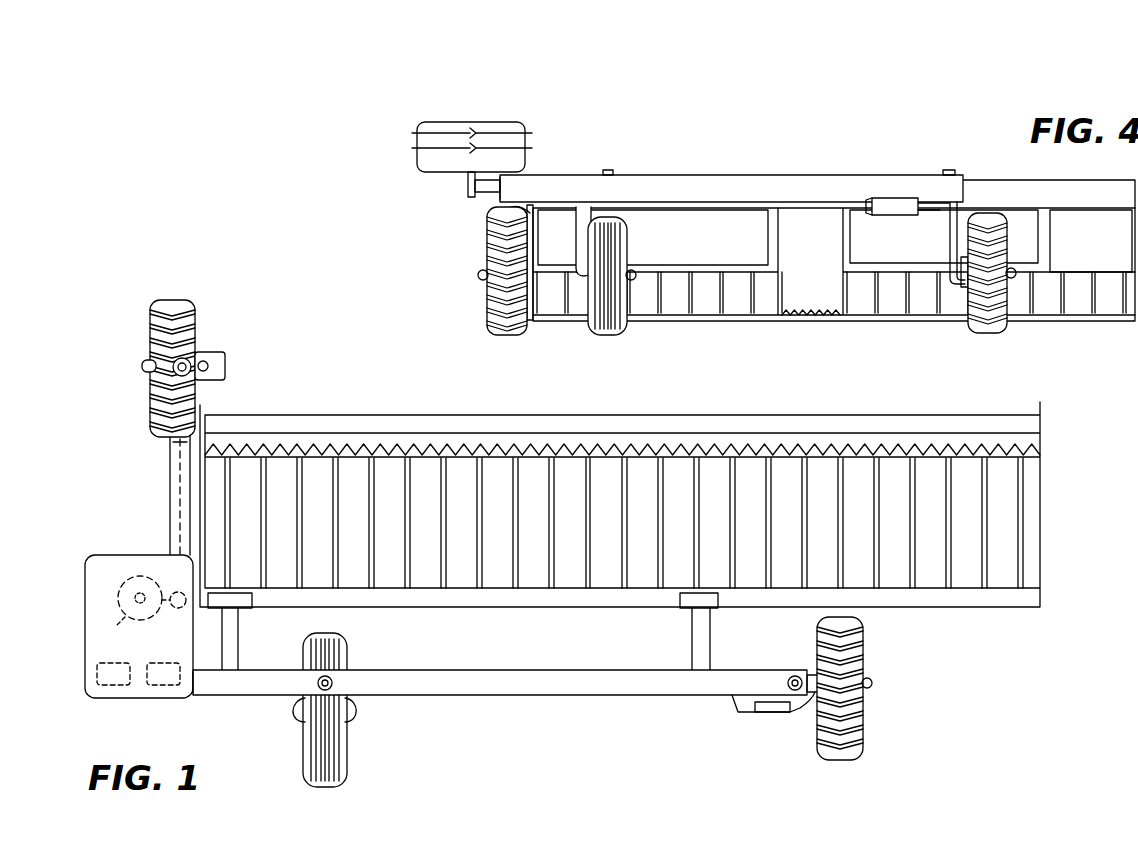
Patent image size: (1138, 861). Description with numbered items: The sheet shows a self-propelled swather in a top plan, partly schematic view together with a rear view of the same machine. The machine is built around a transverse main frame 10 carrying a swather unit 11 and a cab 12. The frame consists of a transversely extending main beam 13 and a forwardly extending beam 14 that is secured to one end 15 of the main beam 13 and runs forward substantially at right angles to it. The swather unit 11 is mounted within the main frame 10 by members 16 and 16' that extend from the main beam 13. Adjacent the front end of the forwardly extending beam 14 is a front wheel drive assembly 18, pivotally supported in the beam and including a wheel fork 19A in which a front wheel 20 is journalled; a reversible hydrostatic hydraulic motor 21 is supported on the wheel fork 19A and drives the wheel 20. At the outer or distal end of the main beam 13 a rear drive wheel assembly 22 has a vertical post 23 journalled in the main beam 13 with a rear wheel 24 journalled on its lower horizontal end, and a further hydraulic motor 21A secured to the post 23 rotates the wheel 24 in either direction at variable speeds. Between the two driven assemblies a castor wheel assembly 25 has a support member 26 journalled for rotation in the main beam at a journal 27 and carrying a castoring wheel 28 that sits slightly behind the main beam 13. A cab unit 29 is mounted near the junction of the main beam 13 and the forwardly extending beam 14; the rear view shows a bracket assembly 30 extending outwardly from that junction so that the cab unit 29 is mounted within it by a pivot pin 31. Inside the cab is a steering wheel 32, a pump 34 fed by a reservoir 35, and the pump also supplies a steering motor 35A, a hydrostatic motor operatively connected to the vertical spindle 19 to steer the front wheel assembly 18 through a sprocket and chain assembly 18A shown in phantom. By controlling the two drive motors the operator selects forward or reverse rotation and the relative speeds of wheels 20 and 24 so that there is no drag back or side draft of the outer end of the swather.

In FIG. 1, the transverse main frame 10 is at (496, 716).
In FIG. 4, the transverse main frame 10 is at (807, 174).
In FIG. 1, the swather unit 11 is at (385, 397).
In FIG. 4, the swather unit 11 is at (726, 333).
In FIG. 1, the cab 12 is at (125, 545).
In FIG. 4, the cab 12 is at (543, 141).
In FIG. 1, the main beam 13 is at (565, 693).
In FIG. 4, the main beam 13 is at (712, 178).
In FIG. 1, the forwardly extending beam 14 is at (174, 510).
In FIG. 1, the end of the main beam 15 is at (180, 700).
In FIG. 4, the end of the main beam 15 is at (505, 198).
In FIG. 1, the member 16 is at (238, 631).
In FIG. 1, the member 16' is at (713, 631).
In FIG. 1, the front wheel drive assembly 18 is at (204, 338).
In FIG. 4, the front wheel drive assembly 18 is at (477, 303).
In FIG. 1, the sprocket and chain assembly 18A is at (193, 392).
In FIG. 1, the vertical spindle 19 is at (184, 376).
In FIG. 4, the vertical spindle 19 is at (503, 208).
In FIG. 1, the wheel fork 19A is at (143, 366).
In FIG. 1, the front wheel 20 is at (183, 303).
In FIG. 4, the front wheel 20 is at (490, 258).
In FIG. 1, the hydraulic motor 21 is at (225, 366).
In FIG. 4, the hydraulic motor 21A is at (963, 287).
In FIG. 1, the rear drive wheel assembly 22 is at (875, 722).
In FIG. 4, the rear drive wheel assembly 22 is at (1019, 345).
In FIG. 1, the vertical post 23 is at (795, 676).
In FIG. 4, the vertical post 23 is at (955, 170).
In FIG. 1, the rear wheel 24 is at (862, 655).
In FIG. 4, the rear wheel 24 is at (998, 332).
In FIG. 1, the castor wheel assembly 25 is at (358, 657).
In FIG. 4, the castor wheel assembly 25 is at (655, 247).
In FIG. 1, the support member 26 is at (293, 712).
In FIG. 4, the support member 26 is at (578, 245).
In FIG. 1, the journal 27 is at (332, 684).
In FIG. 4, the journal 27 is at (612, 170).
In FIG. 1, the castoring wheel 28 is at (348, 755).
In FIG. 4, the castoring wheel 28 is at (600, 335).
In FIG. 4, the cab unit 29 is at (398, 162).
In FIG. 4, the bracket assembly 30 is at (478, 190).
In FIG. 4, the pivot pin 31 is at (468, 185).
In FIG. 1, the steering wheel 32 is at (118, 622).
In FIG. 1, the pump 34 is at (115, 663).
In FIG. 1, the reservoir 35 is at (176, 646).
In FIG. 1, the steering motor 35A is at (200, 440).